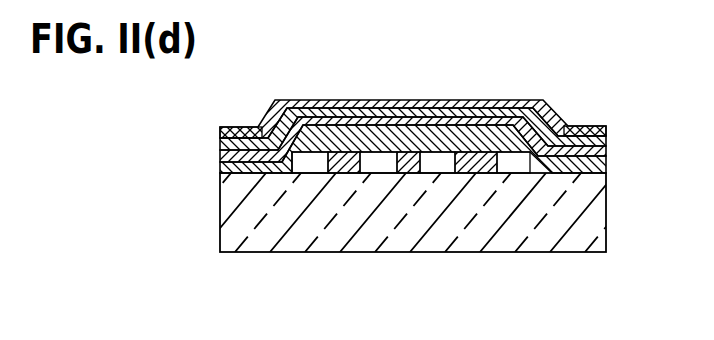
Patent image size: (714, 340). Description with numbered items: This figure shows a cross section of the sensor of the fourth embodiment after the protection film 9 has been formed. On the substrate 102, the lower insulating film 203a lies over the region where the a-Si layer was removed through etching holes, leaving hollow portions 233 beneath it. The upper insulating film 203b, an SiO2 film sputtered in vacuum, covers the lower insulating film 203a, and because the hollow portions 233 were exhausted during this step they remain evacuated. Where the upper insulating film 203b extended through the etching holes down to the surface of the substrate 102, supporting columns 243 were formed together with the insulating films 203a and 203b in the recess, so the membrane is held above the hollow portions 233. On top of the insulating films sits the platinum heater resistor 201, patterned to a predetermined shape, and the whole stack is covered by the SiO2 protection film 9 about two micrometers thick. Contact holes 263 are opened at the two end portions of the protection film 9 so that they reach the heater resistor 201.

The substrate 102 is at (597, 208).
The hollow portion 233 is at (302, 163).
The supporting column 243 is at (413, 163).
The heater resistor 201 is at (493, 117).
The lower insulating film 203a is at (368, 140).
The upper insulating film 203b is at (428, 130).
The contact hole 263 is at (248, 128).
The protection film 9 is at (530, 100).